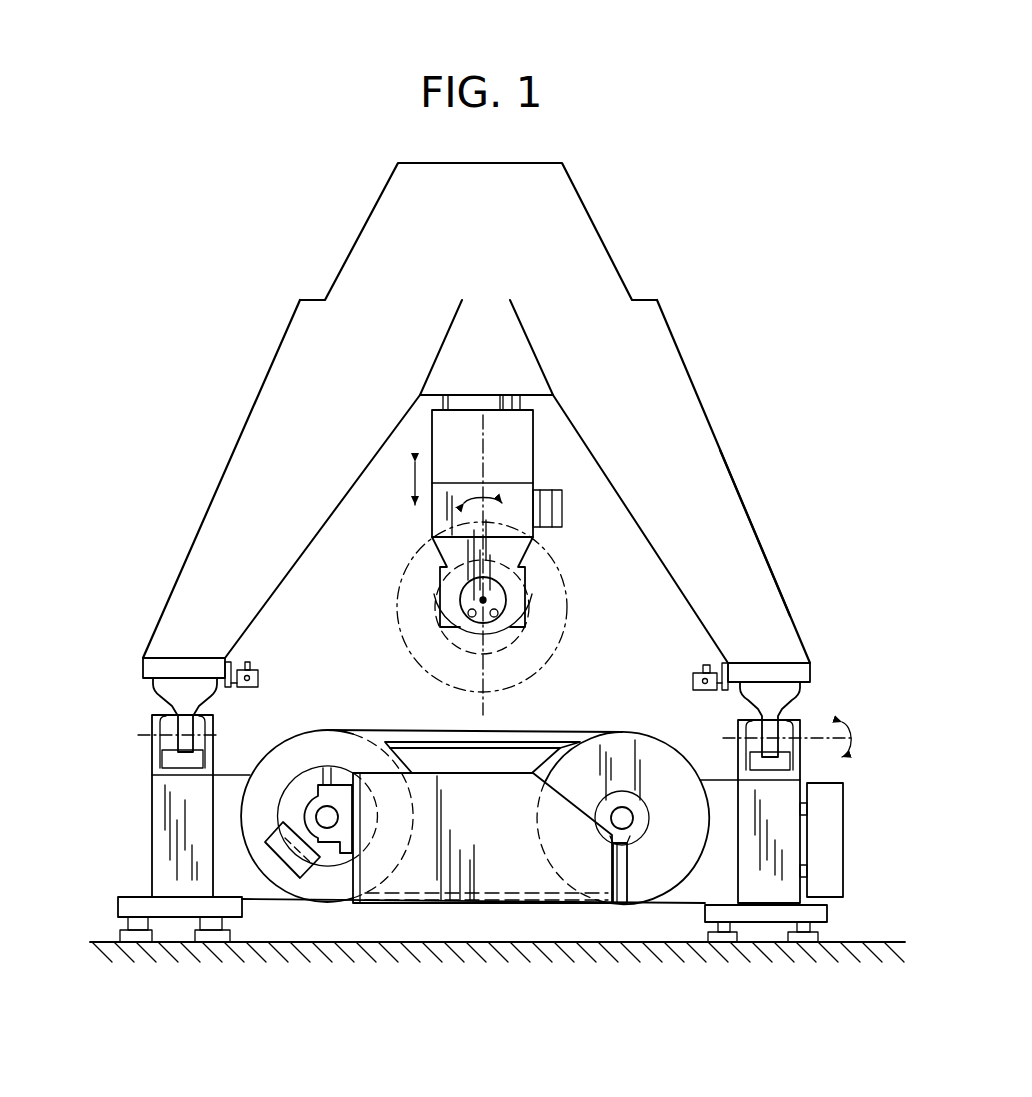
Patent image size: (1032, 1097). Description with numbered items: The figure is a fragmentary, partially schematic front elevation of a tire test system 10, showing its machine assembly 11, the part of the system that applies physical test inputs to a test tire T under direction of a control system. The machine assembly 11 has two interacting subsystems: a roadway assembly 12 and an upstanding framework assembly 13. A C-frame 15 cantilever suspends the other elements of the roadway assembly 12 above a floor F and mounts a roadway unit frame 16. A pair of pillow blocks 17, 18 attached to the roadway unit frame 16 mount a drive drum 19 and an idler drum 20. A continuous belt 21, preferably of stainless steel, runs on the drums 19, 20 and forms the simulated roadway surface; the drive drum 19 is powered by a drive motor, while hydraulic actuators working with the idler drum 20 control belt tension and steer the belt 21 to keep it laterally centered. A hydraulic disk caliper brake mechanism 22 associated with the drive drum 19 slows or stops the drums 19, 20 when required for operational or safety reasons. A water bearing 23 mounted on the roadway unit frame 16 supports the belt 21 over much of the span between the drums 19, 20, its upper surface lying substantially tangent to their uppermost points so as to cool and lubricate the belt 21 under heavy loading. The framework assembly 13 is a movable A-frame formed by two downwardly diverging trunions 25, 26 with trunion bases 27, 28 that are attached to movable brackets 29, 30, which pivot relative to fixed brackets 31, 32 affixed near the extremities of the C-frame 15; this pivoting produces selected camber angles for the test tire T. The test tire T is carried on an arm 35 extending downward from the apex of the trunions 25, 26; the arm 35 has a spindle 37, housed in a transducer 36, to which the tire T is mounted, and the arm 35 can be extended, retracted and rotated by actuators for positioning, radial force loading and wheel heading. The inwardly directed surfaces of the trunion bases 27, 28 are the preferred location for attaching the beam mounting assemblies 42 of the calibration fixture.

The tire test system 10 is at (757, 182).
The machine assembly 11 is at (718, 410).
The roadway assembly 12 is at (532, 908).
The framework assembly 13 is at (777, 577).
The C-frame 15 is at (773, 890).
The roadway unit frame 16 is at (430, 883).
The pillow block 17 is at (338, 840).
The pillow block 18 is at (632, 837).
The drive drum 19 is at (320, 890).
The idler drum 20 is at (670, 870).
The belt 21 is at (573, 733).
The hydraulic disk caliper brake mechanism 22 is at (285, 807).
The water bearing 23 is at (448, 760).
The trunion 25 is at (202, 555).
The trunion 26 is at (730, 530).
The trunion base 27 is at (152, 670).
The trunion base 28 is at (800, 673).
The movable bracket 29 is at (170, 690).
The movable bracket 30 is at (778, 695).
The fixed bracket 31 is at (153, 755).
The fixed bracket 32 is at (795, 755).
The arm 35 is at (522, 450).
The transducer 36 is at (452, 590).
The spindle 37 is at (493, 597).
The beam mounting assembly 42 is at (247, 690).
The test tire T is at (560, 607).
The floor F is at (865, 941).